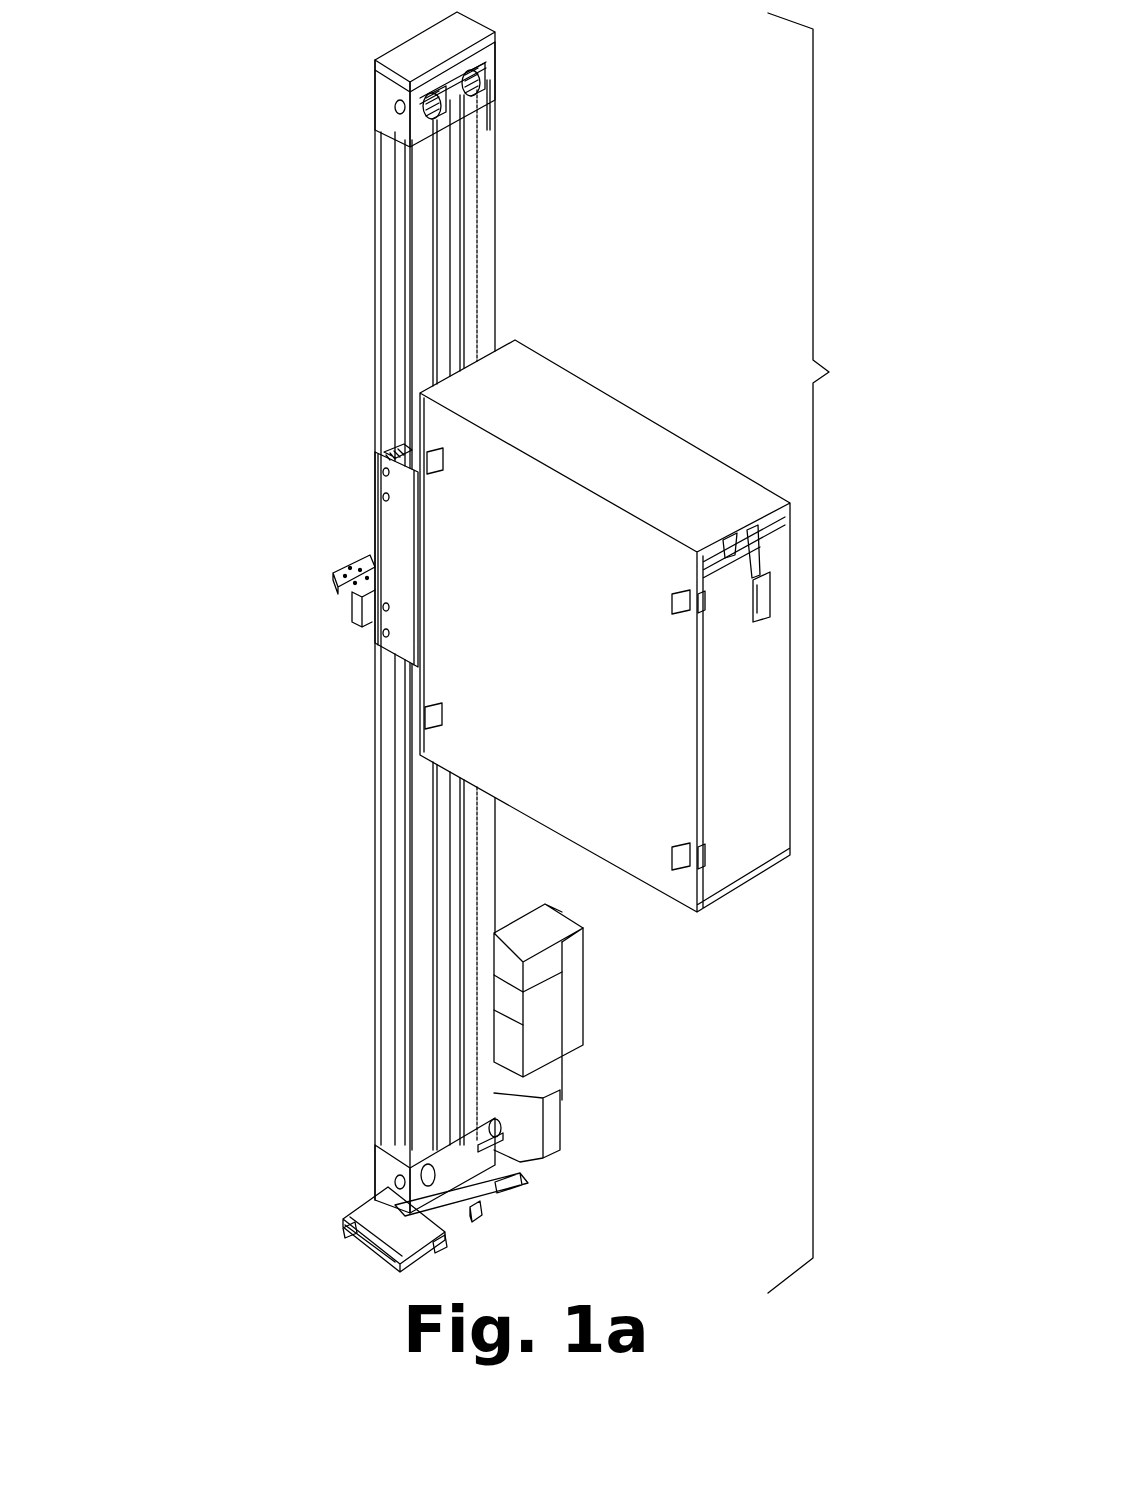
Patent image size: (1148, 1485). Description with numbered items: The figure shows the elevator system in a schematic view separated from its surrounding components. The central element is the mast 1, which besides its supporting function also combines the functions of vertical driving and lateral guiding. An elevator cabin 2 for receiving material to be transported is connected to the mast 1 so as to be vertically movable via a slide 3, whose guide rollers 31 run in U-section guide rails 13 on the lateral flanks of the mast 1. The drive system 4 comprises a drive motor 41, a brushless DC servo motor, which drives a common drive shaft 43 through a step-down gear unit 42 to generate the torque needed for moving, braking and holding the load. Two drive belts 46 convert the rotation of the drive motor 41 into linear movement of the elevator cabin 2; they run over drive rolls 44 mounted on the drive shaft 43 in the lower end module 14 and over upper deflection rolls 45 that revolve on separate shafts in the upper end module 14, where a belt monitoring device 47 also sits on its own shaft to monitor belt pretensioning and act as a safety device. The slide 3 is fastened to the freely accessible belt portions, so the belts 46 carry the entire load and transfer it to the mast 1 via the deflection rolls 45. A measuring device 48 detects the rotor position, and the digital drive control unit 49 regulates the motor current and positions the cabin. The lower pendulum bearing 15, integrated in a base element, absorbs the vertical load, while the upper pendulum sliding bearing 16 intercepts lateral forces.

The mast 1 is at (422, 317).
The elevator cabin 2 is at (452, 440).
The slide 3 is at (397, 550).
The drive system 4 is at (820, 653).
The guide rails 13 is at (414, 250).
The end module 14 is at (383, 117).
The pendulum bearing 15 is at (405, 1228).
The pendulum sliding bearing 16 is at (350, 600).
The guide rollers 31 is at (380, 452).
The drive motor 41 is at (540, 1042).
The step-down gear unit 42 is at (547, 1098).
The drive shaft 43 is at (493, 1143).
The drive rolls 44 is at (427, 1178).
The deflection rolls 45 is at (430, 112).
The drive belts 46 is at (442, 347).
The belt monitoring device 47 is at (448, 82).
The measuring device 48 is at (535, 942).
The drive control unit 49 is at (575, 995).